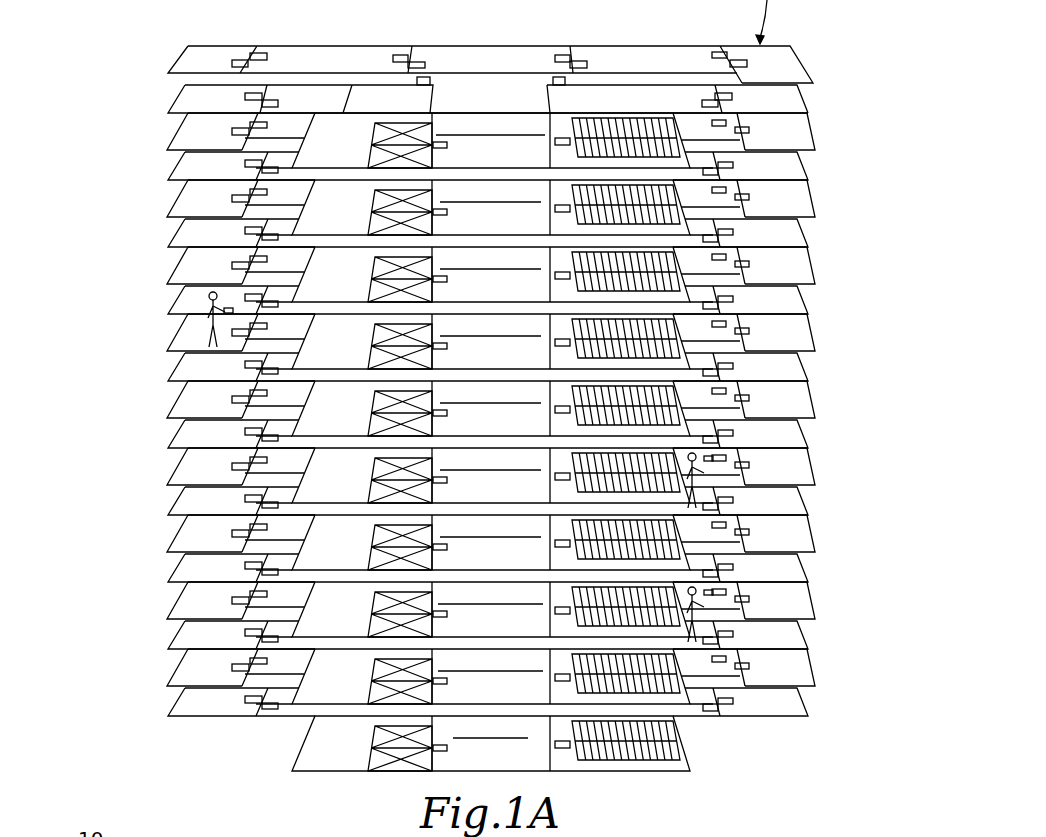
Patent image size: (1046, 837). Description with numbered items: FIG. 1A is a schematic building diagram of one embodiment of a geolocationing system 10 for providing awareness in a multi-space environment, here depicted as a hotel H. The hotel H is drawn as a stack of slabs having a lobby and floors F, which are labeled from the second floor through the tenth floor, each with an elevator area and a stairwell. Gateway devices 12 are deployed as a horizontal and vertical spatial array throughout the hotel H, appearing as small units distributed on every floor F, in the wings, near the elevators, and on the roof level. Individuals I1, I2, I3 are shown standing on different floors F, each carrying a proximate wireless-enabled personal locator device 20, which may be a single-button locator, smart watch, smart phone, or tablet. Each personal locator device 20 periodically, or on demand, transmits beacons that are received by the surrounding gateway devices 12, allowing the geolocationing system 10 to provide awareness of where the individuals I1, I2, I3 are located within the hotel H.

The geolocationing system 10 is at (88, 110).
The gateway device 12 is at (395, 64).
The proximate wireless-enabled personal locator device 20 is at (283, 315).
The hotel H is at (817, 33).
The individual I1 is at (183, 322).
The individual I2 is at (708, 503).
The individual I3 is at (708, 637).
The floors F is at (872, 829).